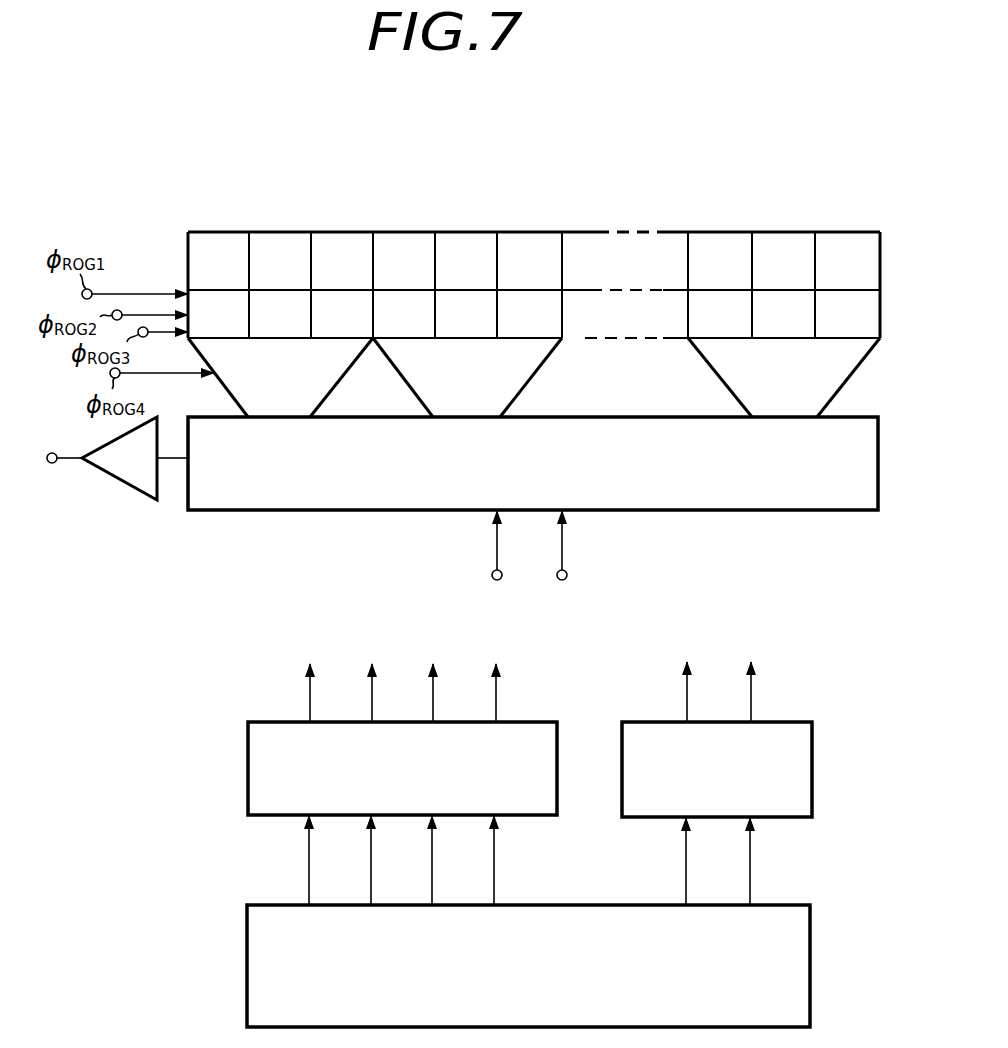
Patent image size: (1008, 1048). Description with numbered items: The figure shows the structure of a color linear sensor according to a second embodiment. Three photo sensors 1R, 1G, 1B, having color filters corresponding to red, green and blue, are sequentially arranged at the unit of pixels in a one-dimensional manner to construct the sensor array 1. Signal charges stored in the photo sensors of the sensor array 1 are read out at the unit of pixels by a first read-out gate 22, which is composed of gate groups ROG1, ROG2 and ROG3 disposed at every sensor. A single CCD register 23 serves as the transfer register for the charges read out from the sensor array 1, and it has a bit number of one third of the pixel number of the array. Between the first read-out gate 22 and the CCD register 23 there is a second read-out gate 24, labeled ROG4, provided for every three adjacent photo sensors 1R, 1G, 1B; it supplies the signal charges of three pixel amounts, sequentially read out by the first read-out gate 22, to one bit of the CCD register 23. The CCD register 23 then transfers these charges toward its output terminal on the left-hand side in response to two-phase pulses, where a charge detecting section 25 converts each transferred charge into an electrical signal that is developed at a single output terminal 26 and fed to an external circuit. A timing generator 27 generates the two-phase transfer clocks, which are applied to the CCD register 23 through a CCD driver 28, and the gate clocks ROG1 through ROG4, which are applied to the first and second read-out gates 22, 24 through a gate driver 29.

The sensor array 1 is at (560, 266).
The photo sensor 1R is at (216, 239).
The photo sensor 1G is at (283, 239).
The photo sensor 1B is at (340, 239).
The first read-out gate 22 is at (883, 318).
The CCD register 23 is at (742, 512).
The second read-out gate 24 is at (853, 383).
The charge detecting section 25 is at (123, 487).
The output terminal 26 is at (52, 463).
The timing generator 27 is at (810, 956).
The CCD driver 28 is at (798, 721).
The gate driver 29 is at (533, 721).